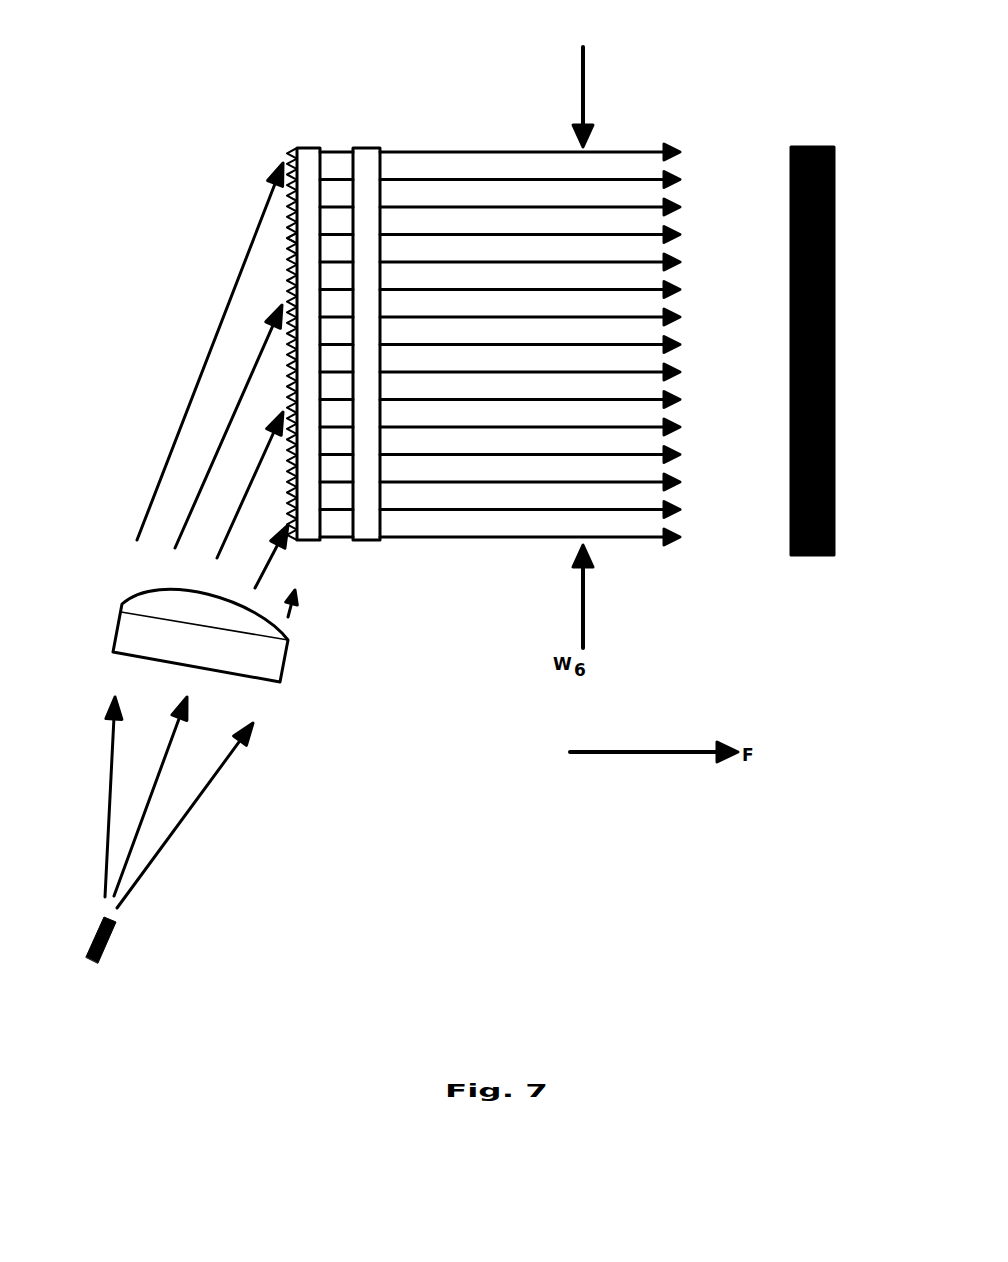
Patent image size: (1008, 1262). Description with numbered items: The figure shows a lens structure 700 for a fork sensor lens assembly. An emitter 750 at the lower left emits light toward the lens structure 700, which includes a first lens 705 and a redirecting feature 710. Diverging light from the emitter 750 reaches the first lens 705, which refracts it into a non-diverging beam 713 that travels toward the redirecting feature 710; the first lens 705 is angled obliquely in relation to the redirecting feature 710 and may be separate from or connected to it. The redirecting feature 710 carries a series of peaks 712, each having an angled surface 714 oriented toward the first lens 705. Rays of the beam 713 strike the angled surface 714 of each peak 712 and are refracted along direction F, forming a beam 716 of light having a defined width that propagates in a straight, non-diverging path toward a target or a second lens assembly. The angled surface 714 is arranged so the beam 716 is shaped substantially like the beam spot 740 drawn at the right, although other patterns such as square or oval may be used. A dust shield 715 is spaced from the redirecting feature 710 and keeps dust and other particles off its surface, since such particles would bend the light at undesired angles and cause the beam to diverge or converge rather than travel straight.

The lens structure 700 is at (175, 50).
The first lens 705 is at (287, 650).
The redirecting feature 710 is at (302, 146).
The peaks 712 is at (290, 226).
The non-diverging beam 713 is at (160, 458).
The angled surface 714 is at (287, 238).
The dust shield 715 is at (366, 146).
The beam of light 716 is at (608, 147).
The beam spot 740 is at (820, 145).
The emitter 750 is at (93, 962).